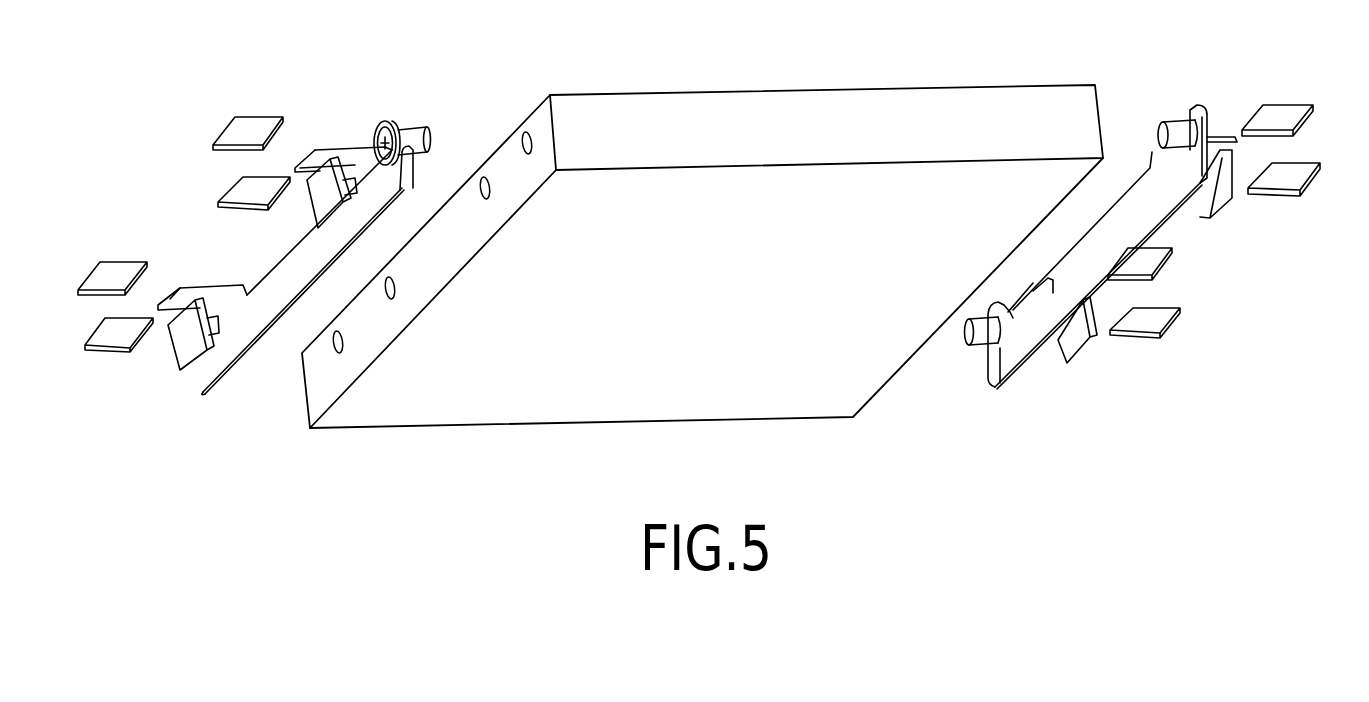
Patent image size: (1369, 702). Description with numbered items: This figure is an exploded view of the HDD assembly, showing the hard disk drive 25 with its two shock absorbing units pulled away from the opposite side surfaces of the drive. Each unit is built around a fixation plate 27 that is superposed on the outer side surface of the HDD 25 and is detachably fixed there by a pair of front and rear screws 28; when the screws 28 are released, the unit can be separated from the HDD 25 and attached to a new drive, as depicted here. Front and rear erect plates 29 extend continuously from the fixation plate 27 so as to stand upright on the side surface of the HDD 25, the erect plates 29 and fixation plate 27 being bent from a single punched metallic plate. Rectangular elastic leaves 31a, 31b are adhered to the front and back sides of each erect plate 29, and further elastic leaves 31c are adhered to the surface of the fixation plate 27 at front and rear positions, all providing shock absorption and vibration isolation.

The hard disk drive 25 is at (738, 100).
The fixation plate 27 is at (242, 332).
The screw 28 is at (415, 133).
The erect plate 29 is at (330, 147).
The elastic leaf 31a is at (230, 185).
The elastic leaf 31b is at (243, 115).
The elastic leaf 31c is at (315, 207).